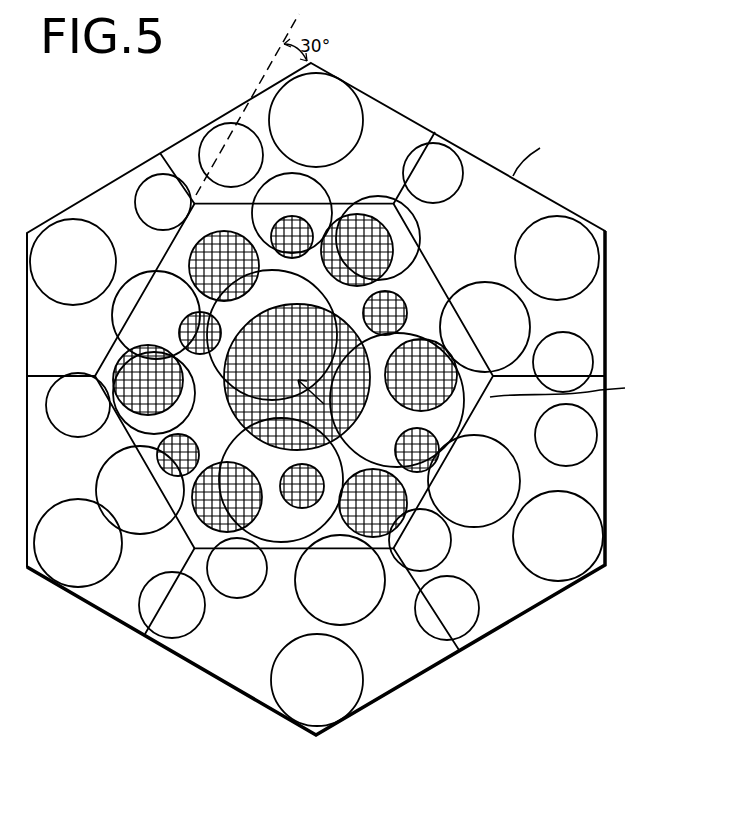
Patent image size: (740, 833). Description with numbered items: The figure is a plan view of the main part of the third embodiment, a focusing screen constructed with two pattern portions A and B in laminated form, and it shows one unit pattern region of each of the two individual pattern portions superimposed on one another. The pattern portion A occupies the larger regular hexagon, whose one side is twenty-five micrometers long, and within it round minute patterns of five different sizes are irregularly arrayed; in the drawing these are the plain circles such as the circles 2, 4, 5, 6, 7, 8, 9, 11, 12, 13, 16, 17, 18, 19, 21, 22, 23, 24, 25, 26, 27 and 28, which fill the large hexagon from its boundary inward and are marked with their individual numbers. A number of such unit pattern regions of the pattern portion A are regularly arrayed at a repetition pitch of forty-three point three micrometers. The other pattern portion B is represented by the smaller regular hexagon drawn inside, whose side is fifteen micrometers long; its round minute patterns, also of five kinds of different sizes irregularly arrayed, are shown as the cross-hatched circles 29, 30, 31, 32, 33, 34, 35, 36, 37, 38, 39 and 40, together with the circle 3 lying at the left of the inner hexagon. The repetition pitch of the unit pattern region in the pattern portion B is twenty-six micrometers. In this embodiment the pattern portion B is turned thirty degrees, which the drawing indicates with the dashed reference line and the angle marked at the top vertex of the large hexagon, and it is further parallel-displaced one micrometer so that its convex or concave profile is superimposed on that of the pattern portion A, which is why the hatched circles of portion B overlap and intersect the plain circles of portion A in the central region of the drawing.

The pattern portion A is at (535, 158).
The pattern portion B is at (567, 396).
The dimple 2 is at (231, 155).
The dimple 3 is at (154, 393).
The dimple 4 is at (241, 528).
The dimple 5 is at (420, 540).
The dimple 6 is at (566, 435).
The dimple 7 is at (378, 238).
The dimple 8 is at (292, 213).
The dimple 9 is at (156, 315).
The dimple 11 is at (340, 580).
The dimple 12 is at (474, 481).
The dimple 13 is at (485, 327).
The dimple 16 is at (247, 343).
The dimple 17 is at (78, 543).
The dimple 18 is at (229, 586).
The dimple 19 is at (316, 120).
The dimple 21 is at (557, 258).
The dimple 22 is at (163, 202).
The dimple 23 is at (78, 405).
The dimple 24 is at (237, 568).
The dimple 25 is at (447, 608).
The dimple 26 is at (563, 362).
The dimple 27 is at (433, 173).
The dimple 28 is at (413, 442).
The hatched dimple 29 is at (292, 237).
The hatched dimple 30 is at (178, 455).
The hatched dimple 31 is at (200, 333).
The hatched dimple 32 is at (302, 486).
The hatched dimple 33 is at (417, 450).
The hatched dimple 34 is at (385, 313).
The hatched dimple 35 is at (357, 250).
The hatched dimple 36 is at (224, 266).
The hatched dimple 37 is at (148, 380).
The hatched dimple 38 is at (227, 497).
The hatched dimple 39 is at (373, 503).
The hatched dimple 40 is at (421, 375).